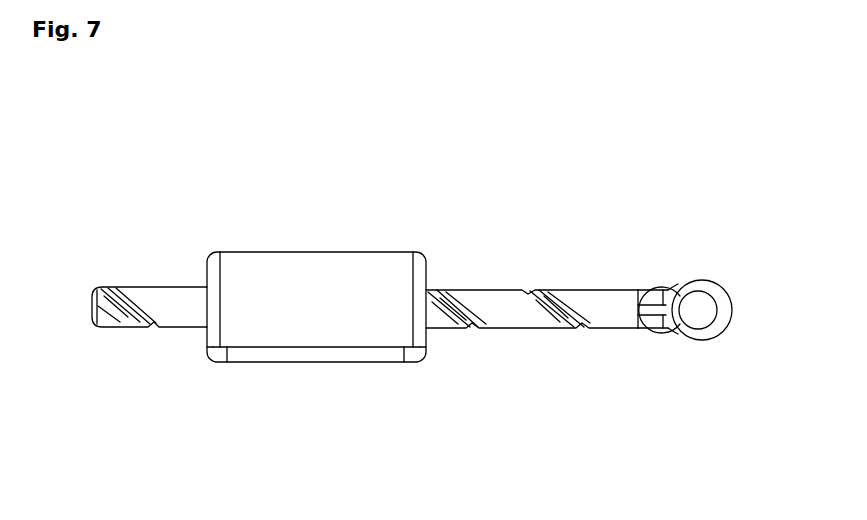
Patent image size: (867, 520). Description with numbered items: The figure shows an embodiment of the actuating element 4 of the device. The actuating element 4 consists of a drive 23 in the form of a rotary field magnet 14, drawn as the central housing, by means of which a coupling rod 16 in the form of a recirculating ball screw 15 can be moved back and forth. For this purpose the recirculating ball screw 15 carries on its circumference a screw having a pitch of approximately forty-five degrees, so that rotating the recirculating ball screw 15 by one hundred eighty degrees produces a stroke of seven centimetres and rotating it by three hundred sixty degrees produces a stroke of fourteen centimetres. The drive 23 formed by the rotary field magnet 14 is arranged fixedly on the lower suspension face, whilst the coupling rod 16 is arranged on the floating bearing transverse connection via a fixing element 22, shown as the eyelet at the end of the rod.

The actuating element 4 is at (432, 270).
The rotary field magnet 14 is at (303, 302).
The drive 23 is at (314, 345).
The recirculating ball screw 15 is at (365, 367).
The coupling rod 16 is at (505, 313).
The fixing element 22 is at (705, 282).